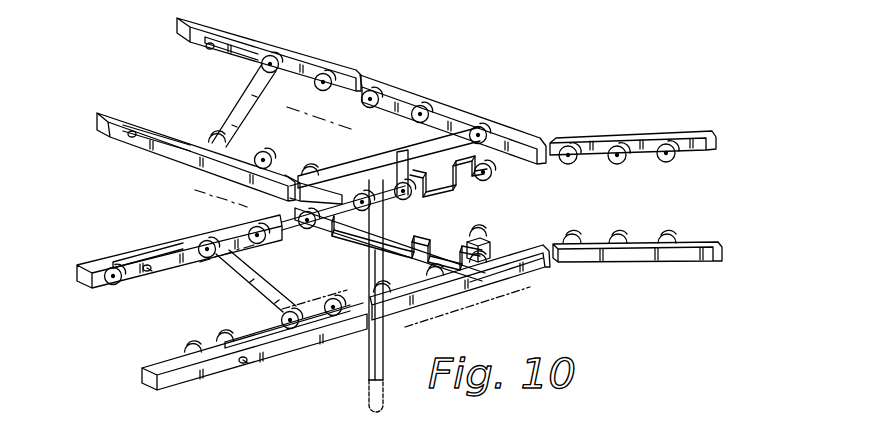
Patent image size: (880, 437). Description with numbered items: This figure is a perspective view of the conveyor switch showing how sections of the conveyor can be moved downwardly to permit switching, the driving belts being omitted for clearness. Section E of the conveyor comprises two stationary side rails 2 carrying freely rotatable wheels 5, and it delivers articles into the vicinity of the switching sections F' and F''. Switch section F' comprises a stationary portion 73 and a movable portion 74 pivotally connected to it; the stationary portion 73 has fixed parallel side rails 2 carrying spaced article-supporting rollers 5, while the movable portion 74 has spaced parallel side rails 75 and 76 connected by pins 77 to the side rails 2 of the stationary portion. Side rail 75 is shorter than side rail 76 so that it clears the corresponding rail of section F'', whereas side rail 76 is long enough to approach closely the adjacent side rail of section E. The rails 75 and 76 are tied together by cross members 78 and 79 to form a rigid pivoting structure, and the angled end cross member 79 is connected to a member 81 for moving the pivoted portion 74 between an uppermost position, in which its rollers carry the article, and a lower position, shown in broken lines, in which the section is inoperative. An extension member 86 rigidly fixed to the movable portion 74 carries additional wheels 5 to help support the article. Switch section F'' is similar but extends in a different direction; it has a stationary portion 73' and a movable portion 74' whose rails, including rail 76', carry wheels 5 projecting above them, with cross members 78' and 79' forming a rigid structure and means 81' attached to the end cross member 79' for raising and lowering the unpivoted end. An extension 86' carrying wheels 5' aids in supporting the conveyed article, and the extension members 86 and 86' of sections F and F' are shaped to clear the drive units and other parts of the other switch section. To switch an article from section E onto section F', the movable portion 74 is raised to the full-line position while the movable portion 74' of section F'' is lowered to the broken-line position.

The side rails 2 is at (593, 138).
The wheels 5 is at (392, 202).
The wheels 5' is at (493, 243).
The stationary portion 73 is at (254, 340).
The stationary portion 73' is at (256, 191).
The movable portion 74 is at (460, 298).
The movable portion 74' is at (196, 137).
The side rail 75 is at (236, 228).
The side rail 76 is at (506, 292).
The rail 76' is at (361, 91).
The pins 77 is at (148, 272).
The cross member 78 is at (256, 281).
The cross member 78' is at (238, 105).
The end cross member 79 is at (390, 244).
The end cross member 79' is at (389, 157).
The member 81 is at (357, 296).
The means 81' is at (383, 167).
The extension member 86 is at (453, 188).
The extension 86' is at (392, 243).
The section E is at (669, 125).
The section F is at (189, 208).
The switch section F' is at (192, 395).
The switch section F'' is at (410, 56).